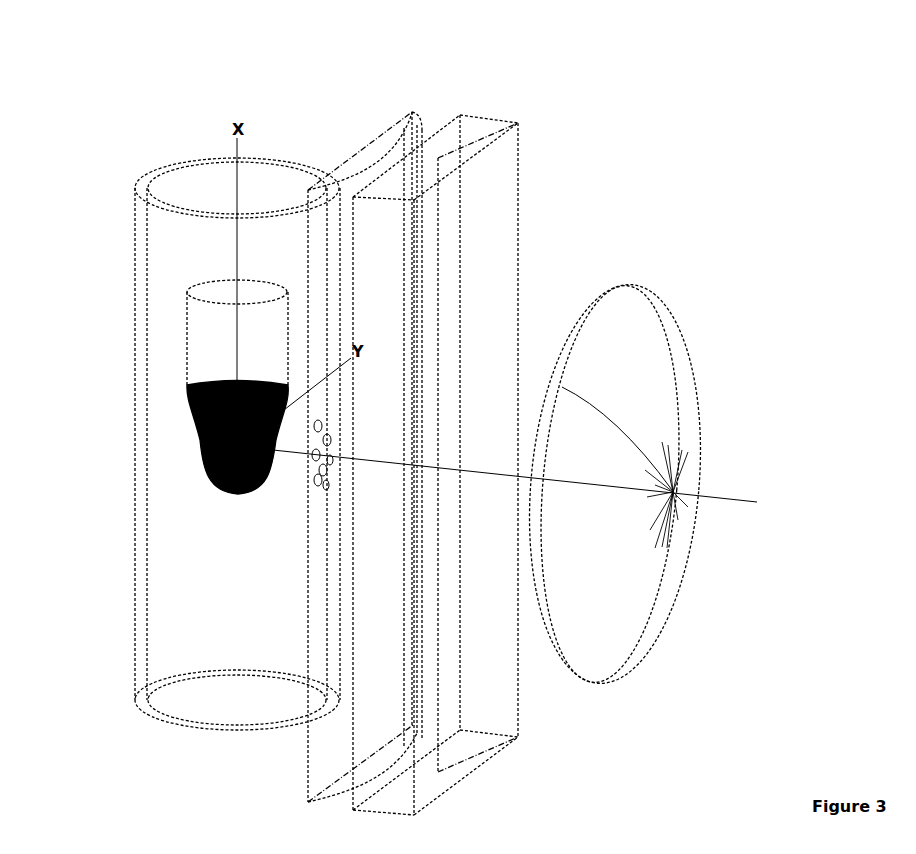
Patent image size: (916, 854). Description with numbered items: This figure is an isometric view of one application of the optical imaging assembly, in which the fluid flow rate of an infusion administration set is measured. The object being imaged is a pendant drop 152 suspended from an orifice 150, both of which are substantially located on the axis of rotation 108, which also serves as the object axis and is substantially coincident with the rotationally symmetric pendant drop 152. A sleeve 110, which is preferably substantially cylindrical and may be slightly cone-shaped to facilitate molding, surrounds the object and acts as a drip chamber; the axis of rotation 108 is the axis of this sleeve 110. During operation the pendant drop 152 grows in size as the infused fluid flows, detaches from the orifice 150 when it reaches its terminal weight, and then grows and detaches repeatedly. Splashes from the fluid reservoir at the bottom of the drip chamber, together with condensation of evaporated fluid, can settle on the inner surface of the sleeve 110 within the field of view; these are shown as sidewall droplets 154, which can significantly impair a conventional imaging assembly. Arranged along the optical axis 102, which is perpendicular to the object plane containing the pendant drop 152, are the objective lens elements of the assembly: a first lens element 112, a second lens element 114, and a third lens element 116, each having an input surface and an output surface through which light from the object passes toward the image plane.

The optical axis 102 is at (733, 496).
The axis of rotation 108 is at (230, 180).
The sleeve 110 is at (272, 168).
The first lens element 112 is at (394, 132).
The second lens element 114 is at (470, 129).
The third lens element 116 is at (633, 306).
The orifice 150 is at (206, 352).
The pendant drop 152 is at (195, 460).
The sidewall droplets 154 is at (302, 488).